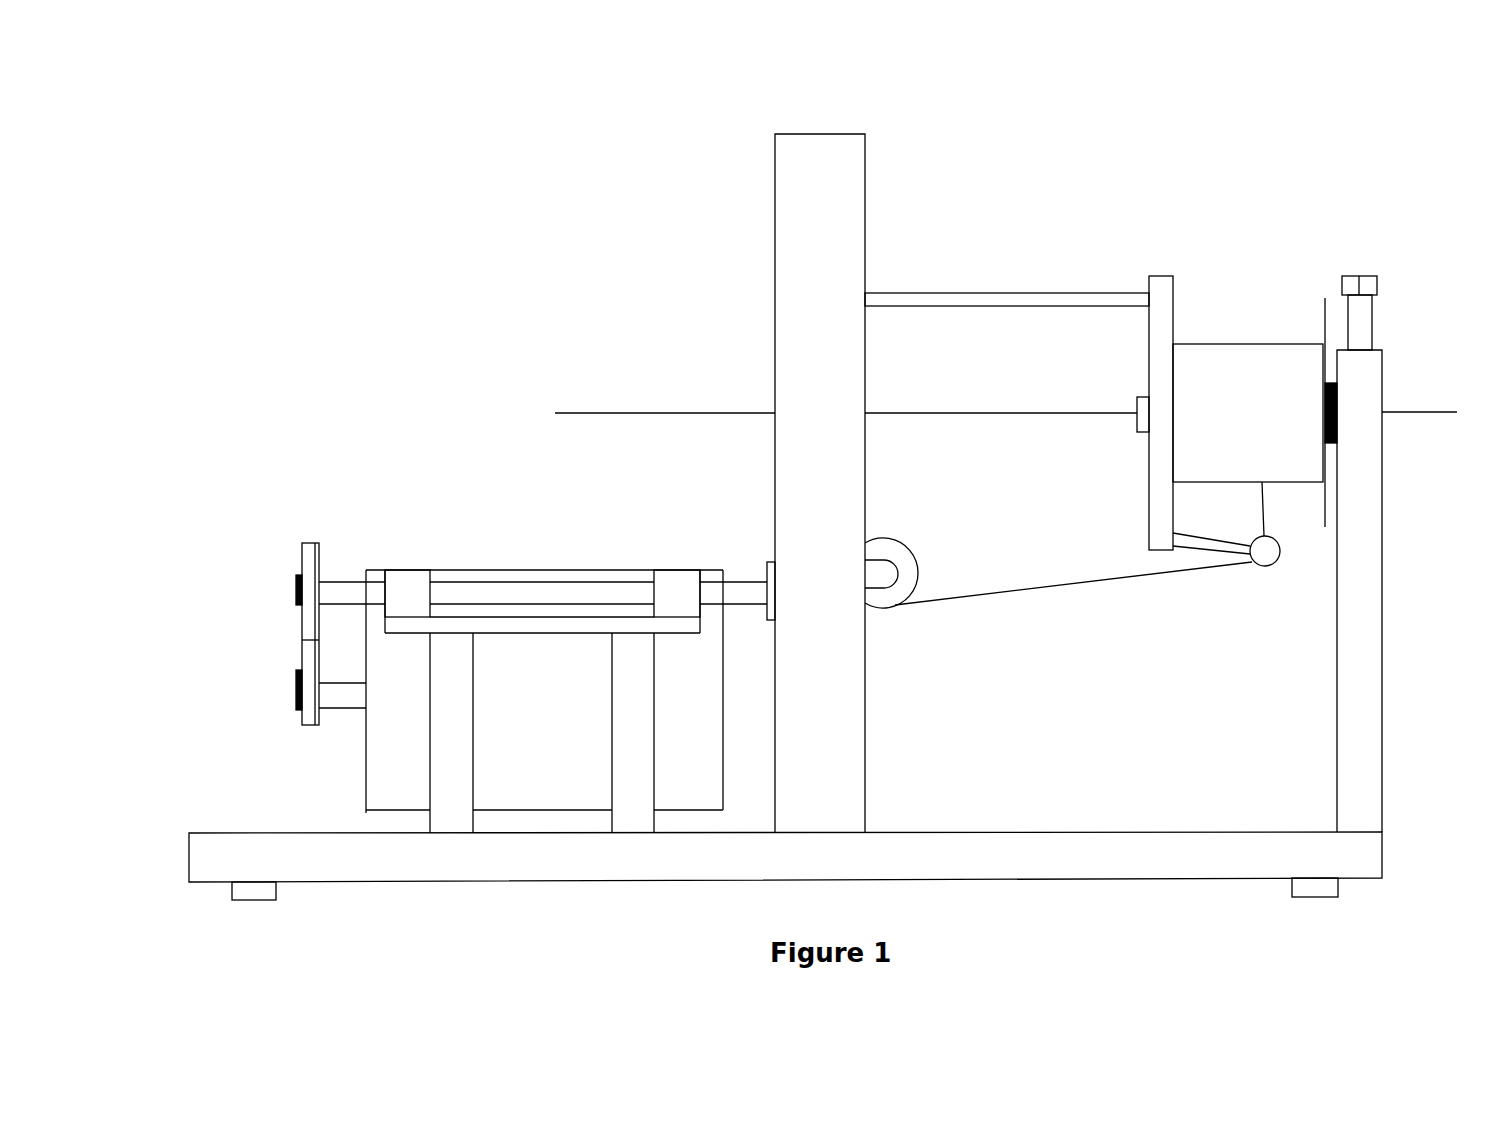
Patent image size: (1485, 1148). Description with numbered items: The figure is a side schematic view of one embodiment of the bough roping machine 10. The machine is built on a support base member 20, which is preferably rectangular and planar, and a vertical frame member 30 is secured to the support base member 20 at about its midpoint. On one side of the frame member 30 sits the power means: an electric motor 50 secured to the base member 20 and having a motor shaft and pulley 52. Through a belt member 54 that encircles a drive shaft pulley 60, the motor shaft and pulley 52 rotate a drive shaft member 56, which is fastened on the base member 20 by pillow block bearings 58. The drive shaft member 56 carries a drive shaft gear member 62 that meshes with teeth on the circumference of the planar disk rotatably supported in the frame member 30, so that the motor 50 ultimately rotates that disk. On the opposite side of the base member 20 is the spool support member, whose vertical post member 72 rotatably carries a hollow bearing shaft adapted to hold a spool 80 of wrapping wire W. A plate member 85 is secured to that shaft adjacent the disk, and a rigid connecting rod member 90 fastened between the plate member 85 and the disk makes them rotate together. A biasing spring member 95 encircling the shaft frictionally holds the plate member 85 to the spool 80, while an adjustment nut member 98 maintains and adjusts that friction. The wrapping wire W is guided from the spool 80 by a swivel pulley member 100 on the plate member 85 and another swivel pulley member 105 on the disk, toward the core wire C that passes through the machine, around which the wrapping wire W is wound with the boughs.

The bough roping machine 10 is at (443, 365).
The support base member 20 is at (422, 867).
The vertical frame member 30 is at (812, 143).
The electric motor 50 is at (561, 769).
The motor shaft and pulley 52 is at (330, 702).
The belt member 54 is at (300, 638).
The drive shaft member 56 is at (343, 580).
The pillow block bearings 58 is at (407, 575).
The drive shaft pulley 60 is at (301, 563).
The drive shaft gear member 62 is at (762, 560).
The vertical post member 72 is at (1368, 780).
The spool 80 is at (1248, 343).
The plate member 85 is at (1160, 274).
The rigid connecting rod member 90 is at (912, 293).
The biasing spring member 95 is at (1328, 442).
The adjustment nut member 98 is at (1133, 433).
The swivel pulley member 100 is at (1265, 571).
The swivel pulley member 105 is at (882, 608).
The core wire C is at (697, 413).
The wrapping wire W is at (1076, 583).